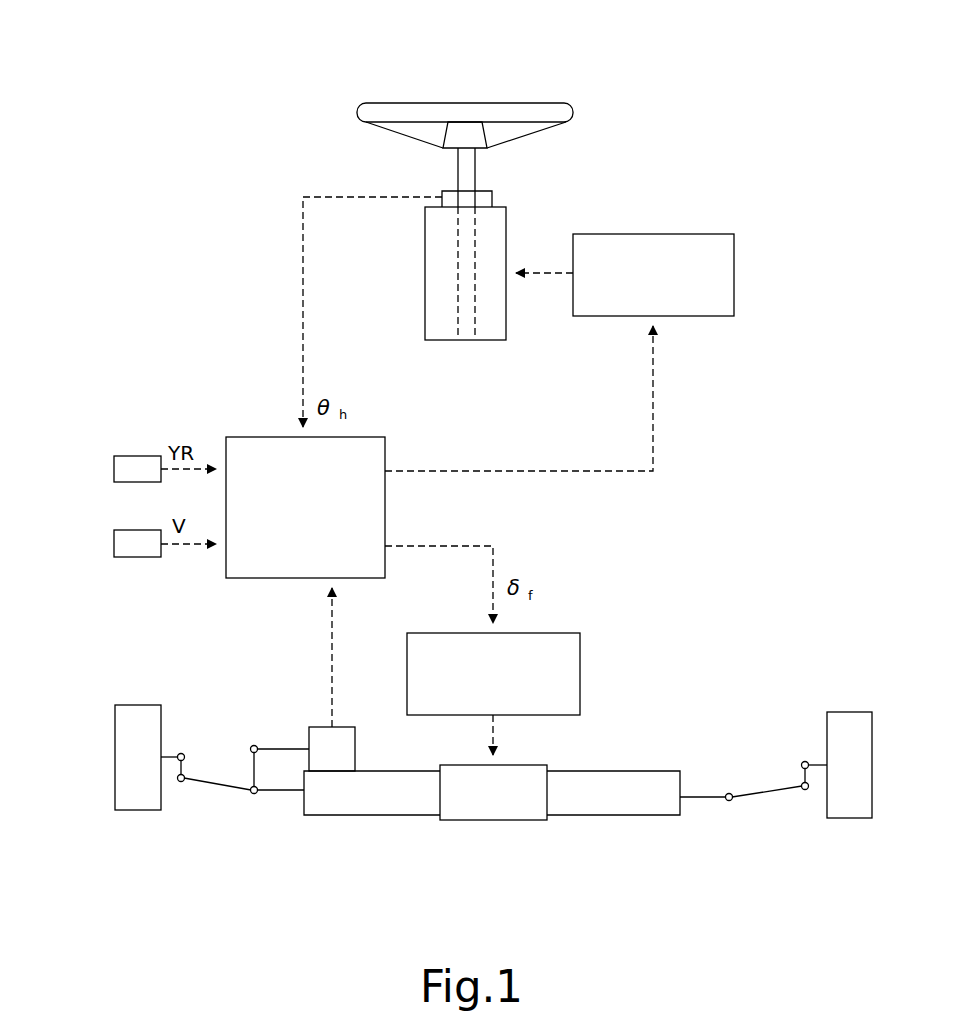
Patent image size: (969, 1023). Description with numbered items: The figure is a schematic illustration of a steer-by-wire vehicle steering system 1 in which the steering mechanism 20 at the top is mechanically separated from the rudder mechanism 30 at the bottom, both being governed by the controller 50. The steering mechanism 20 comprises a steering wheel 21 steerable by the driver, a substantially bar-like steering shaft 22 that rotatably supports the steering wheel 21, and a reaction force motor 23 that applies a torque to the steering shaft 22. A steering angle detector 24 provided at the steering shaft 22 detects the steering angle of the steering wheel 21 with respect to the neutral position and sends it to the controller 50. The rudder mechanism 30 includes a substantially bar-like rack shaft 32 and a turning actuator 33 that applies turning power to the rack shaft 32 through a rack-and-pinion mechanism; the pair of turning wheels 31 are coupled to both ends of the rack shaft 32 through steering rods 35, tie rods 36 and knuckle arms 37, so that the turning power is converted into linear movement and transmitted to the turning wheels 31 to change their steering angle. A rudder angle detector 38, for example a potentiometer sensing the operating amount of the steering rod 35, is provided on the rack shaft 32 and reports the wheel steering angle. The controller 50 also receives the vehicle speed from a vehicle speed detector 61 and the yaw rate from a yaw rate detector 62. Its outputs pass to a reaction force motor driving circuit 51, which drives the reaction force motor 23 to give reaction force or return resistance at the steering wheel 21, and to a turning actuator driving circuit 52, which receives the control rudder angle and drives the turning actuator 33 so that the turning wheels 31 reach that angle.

The vehicle steering system 1 is at (200, 139).
The steering mechanism 20 is at (699, 167).
The steering wheel 21 is at (562, 111).
The steering shaft 22 is at (465, 183).
The reaction force motor 23 is at (488, 222).
The steering angle detector 24 is at (442, 190).
The rudder mechanism 30 is at (698, 669).
The turning wheels 31 is at (135, 806).
The rack shaft 32 is at (358, 806).
The turning actuator 33 is at (495, 808).
The steering rods 35 is at (283, 793).
The tie rods 36 is at (225, 788).
The knuckle arms 37 is at (184, 768).
The rudder angle detector 38 is at (342, 750).
The controller 50 is at (353, 443).
The reaction force motor driving circuit 51 is at (723, 252).
The turning actuator driving circuit 52 is at (547, 640).
The vehicle speed detector 61 is at (113, 541).
The yaw rate detector 62 is at (113, 467).